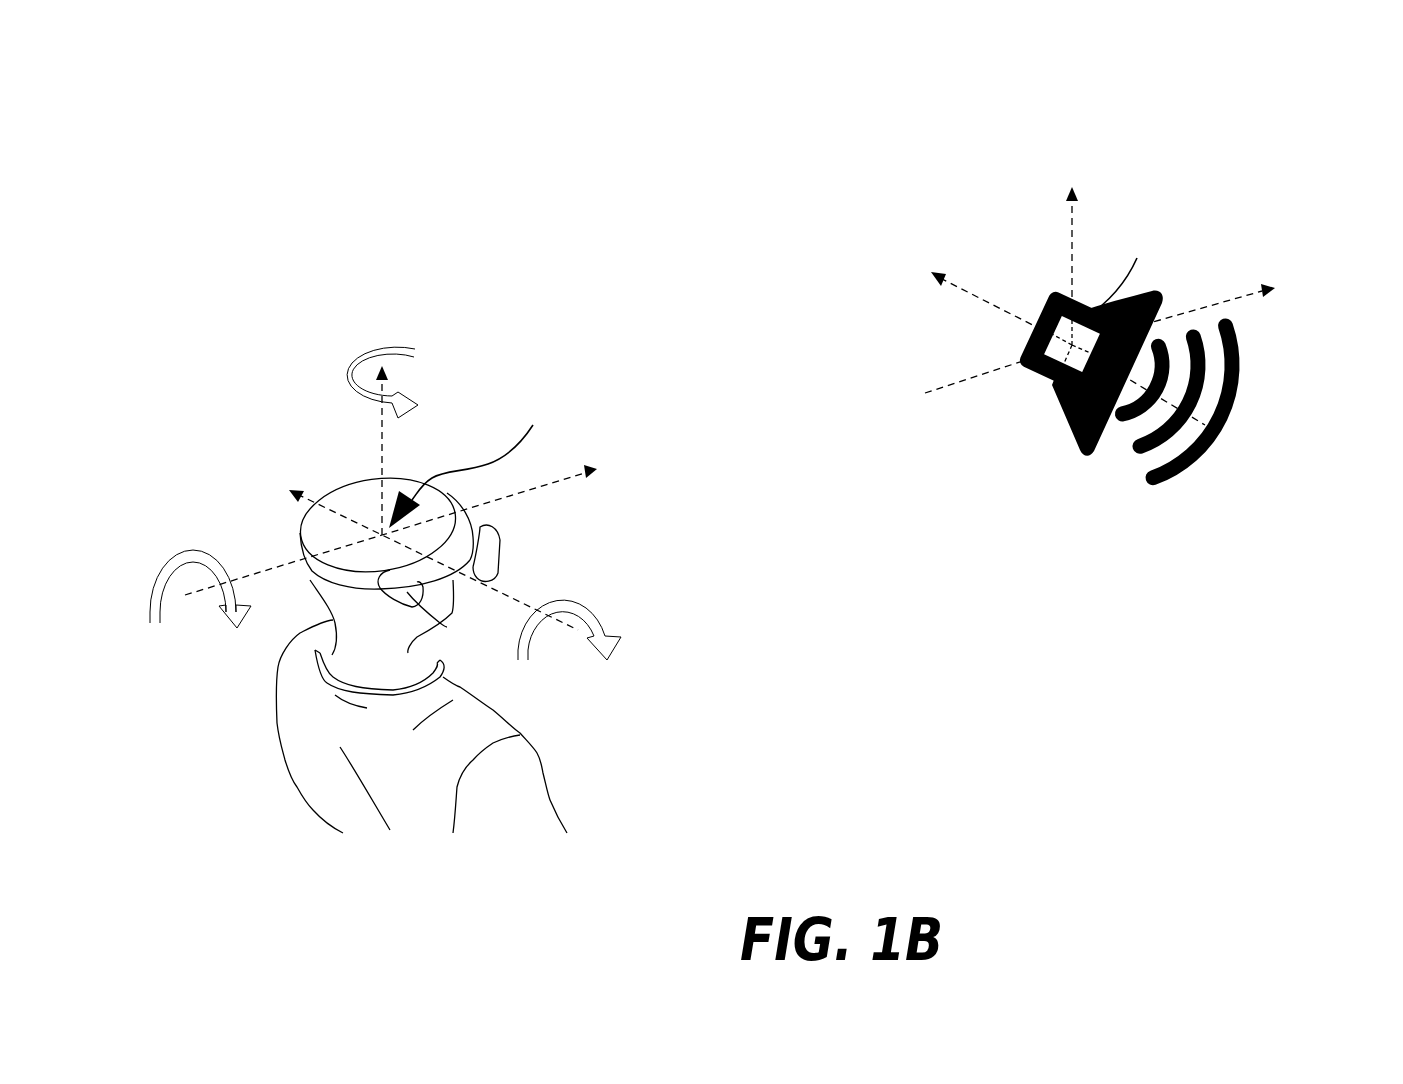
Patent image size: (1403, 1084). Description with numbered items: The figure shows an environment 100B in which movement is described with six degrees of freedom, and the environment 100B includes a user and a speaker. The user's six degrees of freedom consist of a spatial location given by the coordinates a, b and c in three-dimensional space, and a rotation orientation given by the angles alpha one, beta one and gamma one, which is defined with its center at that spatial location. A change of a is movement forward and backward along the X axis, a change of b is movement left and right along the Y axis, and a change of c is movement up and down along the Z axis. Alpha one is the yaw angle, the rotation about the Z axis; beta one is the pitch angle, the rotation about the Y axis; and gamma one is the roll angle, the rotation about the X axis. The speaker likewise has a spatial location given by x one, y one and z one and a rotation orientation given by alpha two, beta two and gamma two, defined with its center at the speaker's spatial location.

The environment 100B is at (848, 96).
The X axis X is at (360, 540).
The Y axis Y is at (462, 584).
The Z axis Z is at (398, 421).